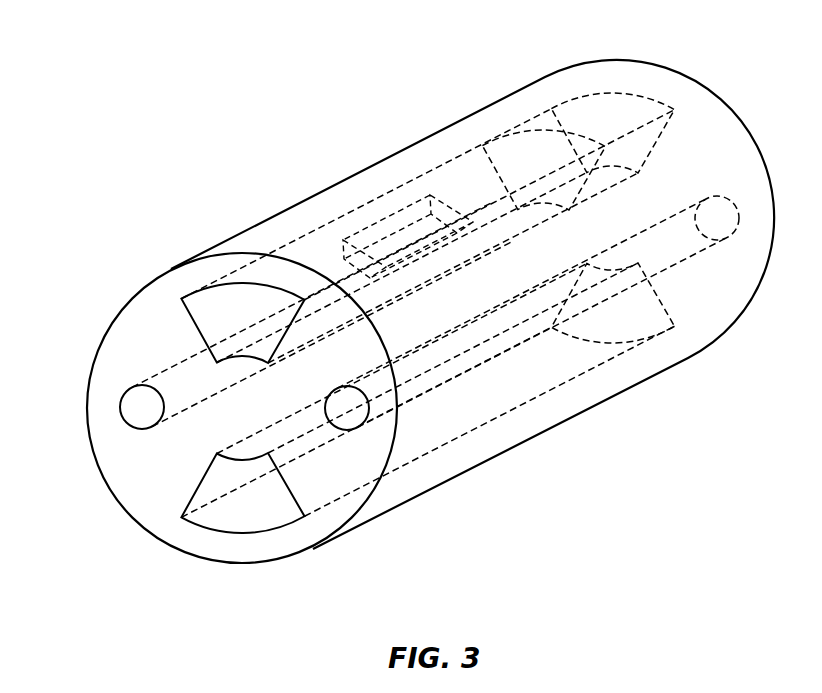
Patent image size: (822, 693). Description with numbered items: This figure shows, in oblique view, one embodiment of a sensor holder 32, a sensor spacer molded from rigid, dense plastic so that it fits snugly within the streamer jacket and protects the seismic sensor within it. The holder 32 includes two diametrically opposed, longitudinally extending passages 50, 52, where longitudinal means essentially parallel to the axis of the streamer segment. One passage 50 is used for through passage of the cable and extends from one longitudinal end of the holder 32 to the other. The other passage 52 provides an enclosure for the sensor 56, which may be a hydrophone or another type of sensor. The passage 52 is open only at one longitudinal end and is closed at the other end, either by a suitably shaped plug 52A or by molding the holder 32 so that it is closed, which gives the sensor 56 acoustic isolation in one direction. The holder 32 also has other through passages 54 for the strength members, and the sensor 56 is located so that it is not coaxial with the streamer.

The sensor holder 32 is at (201, 74).
The passage 50 is at (212, 497).
The passage 52 is at (212, 316).
The plug 52A is at (605, 107).
The through passages 54 is at (137, 410).
The sensor 56 is at (395, 243).